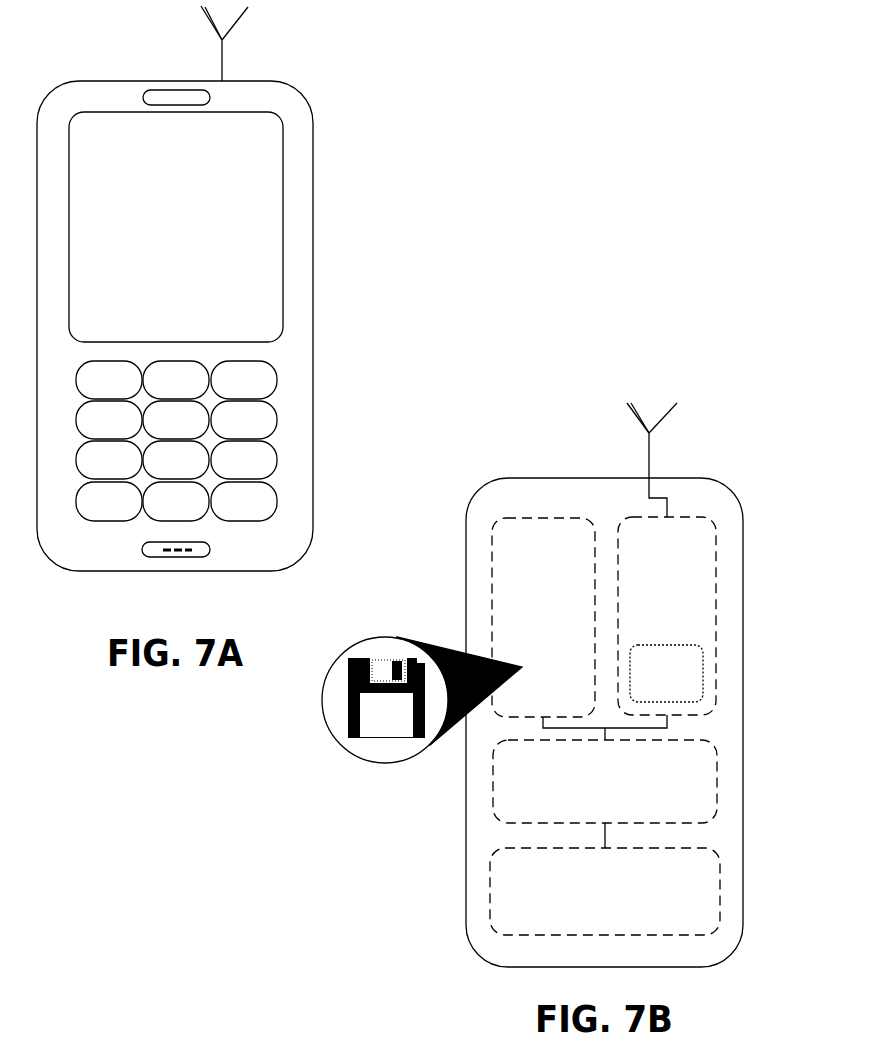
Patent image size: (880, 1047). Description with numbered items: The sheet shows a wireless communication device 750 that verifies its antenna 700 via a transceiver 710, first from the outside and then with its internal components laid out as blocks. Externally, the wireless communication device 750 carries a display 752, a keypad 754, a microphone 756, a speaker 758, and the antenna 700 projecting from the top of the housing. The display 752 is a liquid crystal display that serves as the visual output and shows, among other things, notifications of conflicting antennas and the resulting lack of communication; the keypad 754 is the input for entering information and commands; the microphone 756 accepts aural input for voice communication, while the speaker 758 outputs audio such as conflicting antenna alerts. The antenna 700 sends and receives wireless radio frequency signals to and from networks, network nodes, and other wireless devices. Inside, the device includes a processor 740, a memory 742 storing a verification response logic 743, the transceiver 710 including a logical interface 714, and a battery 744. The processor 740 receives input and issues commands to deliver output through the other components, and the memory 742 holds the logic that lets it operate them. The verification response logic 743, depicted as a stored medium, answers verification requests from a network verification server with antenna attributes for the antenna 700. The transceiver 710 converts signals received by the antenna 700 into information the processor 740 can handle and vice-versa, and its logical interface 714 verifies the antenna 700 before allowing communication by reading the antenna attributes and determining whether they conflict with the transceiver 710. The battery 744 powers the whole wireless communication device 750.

In FIG. 7A, the antenna 700 is at (266, 43).
In FIG. 7B, the antenna 700 is at (692, 460).
In FIG. 7B, the transceiver 710 is at (724, 616).
In FIG. 7B, the logical interface 714 is at (730, 648).
In FIG. 7B, the processor 740 is at (548, 801).
In FIG. 7B, the memory 742 is at (496, 585).
In FIG. 7B, the verification response logic 743 is at (391, 708).
In FIG. 7B, the battery 744 is at (660, 887).
In FIG. 7A, the wireless communication device 750 is at (175, 305).
In FIG. 7B, the wireless communication device 750 is at (604, 700).
In FIG. 7A, the display 752 is at (233, 227).
In FIG. 7A, the keypad 754 is at (233, 441).
In FIG. 7A, the microphone 756 is at (127, 578).
In FIG. 7A, the speaker 758 is at (145, 119).